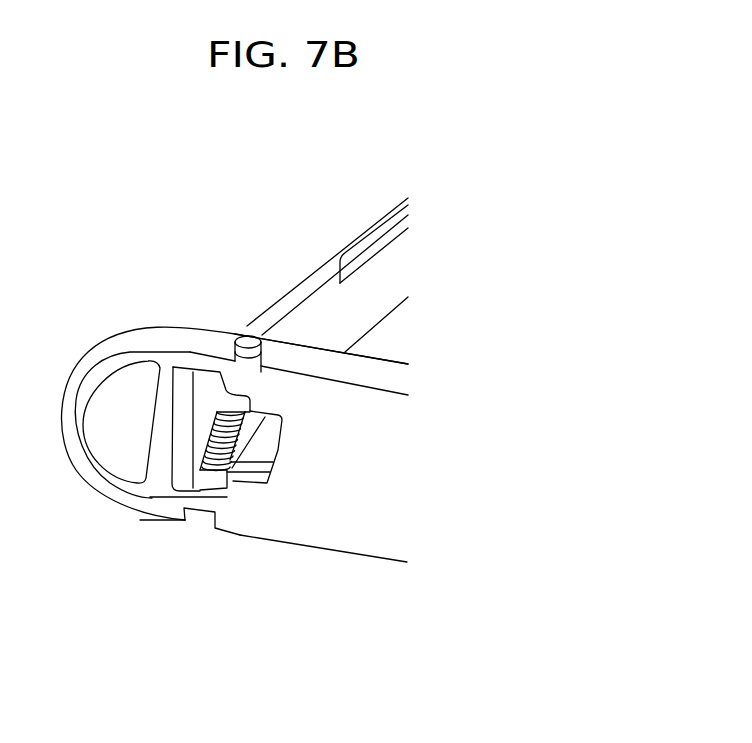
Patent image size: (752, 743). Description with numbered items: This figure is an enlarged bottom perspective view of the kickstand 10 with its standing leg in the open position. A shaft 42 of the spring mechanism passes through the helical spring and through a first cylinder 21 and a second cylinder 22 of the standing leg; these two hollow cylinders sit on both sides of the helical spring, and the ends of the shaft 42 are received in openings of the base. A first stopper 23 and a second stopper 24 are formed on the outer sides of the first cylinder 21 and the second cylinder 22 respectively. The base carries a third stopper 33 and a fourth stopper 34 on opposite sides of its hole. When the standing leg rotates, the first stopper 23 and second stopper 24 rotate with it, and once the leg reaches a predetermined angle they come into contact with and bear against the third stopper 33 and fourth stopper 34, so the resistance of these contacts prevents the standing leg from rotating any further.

The kickstand 10 is at (108, 151).
The first cylinder 21 is at (235, 402).
The second cylinder 22 is at (207, 478).
The first stopper 23 is at (215, 383).
The second stopper 24 is at (187, 495).
The third stopper 33 is at (240, 383).
The fourth stopper 34 is at (205, 507).
The shaft 42 is at (247, 337).